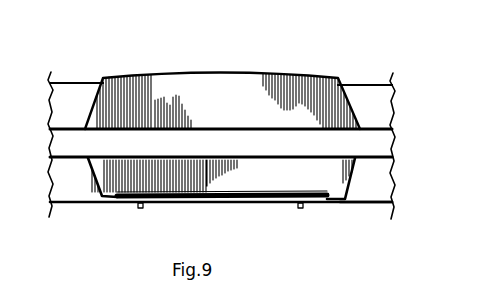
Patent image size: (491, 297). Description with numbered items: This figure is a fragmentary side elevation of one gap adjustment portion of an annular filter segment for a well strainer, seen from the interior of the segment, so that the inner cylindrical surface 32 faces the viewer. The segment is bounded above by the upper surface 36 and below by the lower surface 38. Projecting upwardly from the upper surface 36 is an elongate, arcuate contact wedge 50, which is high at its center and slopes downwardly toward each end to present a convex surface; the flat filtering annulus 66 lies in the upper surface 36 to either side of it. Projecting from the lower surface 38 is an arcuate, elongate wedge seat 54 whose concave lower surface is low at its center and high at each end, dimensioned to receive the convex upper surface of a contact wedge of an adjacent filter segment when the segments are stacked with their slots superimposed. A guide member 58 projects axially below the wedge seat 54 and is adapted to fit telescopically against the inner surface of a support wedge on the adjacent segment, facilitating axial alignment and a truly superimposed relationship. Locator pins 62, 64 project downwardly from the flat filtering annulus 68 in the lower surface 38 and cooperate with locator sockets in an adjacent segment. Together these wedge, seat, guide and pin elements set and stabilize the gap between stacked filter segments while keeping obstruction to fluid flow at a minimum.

The inner cylindrical surface 32 is at (229, 143).
The upper surface 36 is at (379, 106).
The lower surface 38 is at (68, 187).
The contact wedge 50 is at (221, 73).
The wedge seat 54 is at (332, 174).
The guide member 58 is at (240, 172).
The locator pin 62 is at (300, 209).
The locator pin 64 is at (140, 209).
The flat filtering annulus 66 is at (372, 85).
The flat filtering annulus 68 is at (90, 0).